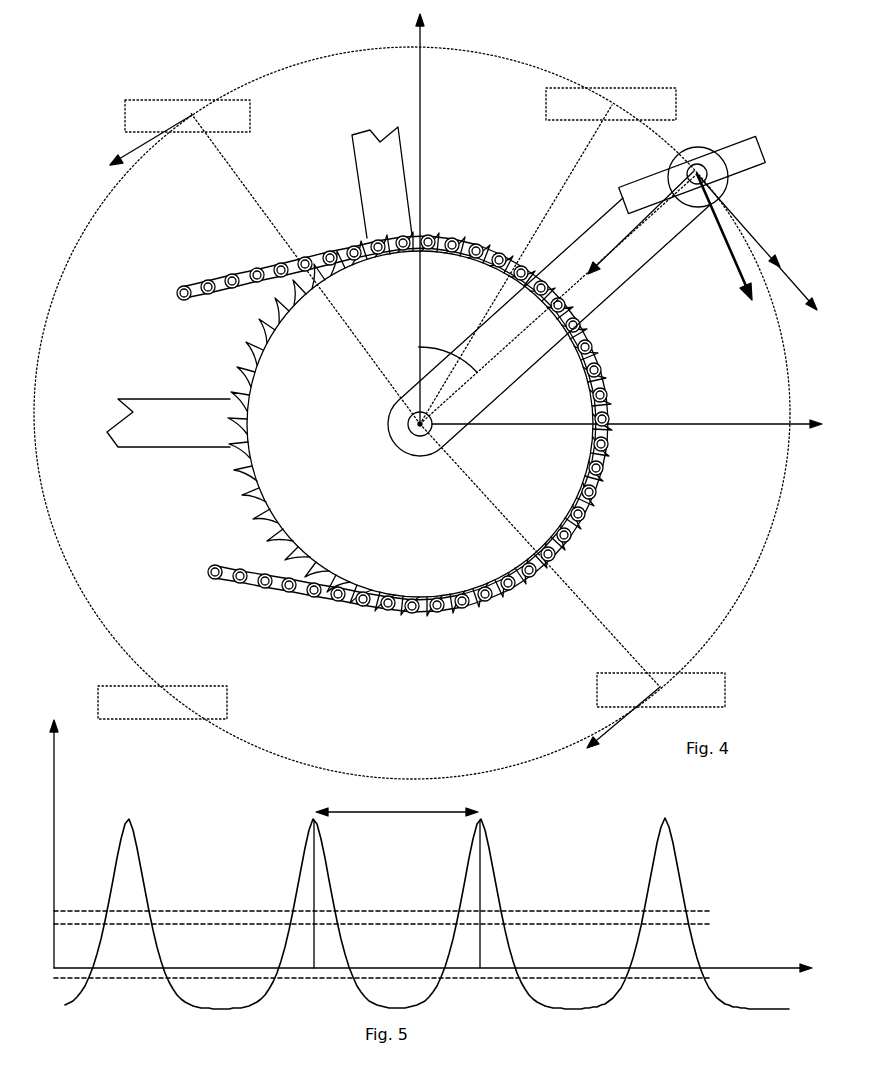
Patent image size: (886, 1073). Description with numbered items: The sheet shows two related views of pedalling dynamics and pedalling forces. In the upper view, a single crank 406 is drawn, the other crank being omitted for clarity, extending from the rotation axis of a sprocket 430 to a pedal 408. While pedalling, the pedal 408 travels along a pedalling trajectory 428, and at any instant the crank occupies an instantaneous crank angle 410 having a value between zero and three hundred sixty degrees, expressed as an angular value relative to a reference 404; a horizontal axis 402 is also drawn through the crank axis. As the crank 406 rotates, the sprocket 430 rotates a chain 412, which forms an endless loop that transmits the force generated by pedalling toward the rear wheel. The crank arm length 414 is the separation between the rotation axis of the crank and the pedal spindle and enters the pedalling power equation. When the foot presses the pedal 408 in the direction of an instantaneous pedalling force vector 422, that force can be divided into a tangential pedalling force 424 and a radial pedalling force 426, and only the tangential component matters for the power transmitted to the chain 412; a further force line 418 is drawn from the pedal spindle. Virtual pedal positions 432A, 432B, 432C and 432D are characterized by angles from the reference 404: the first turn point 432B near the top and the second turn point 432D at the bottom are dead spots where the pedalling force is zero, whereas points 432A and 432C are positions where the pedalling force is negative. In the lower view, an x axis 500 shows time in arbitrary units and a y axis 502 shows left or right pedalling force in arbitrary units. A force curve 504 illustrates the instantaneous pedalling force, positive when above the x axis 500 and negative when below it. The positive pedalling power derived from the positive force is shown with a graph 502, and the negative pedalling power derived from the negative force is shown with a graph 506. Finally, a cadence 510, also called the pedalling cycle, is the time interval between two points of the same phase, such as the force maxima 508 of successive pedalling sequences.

In FIG. 4, the horizontal reference axis 402 is at (774, 423).
In FIG. 4, the reference 404 is at (420, 79).
In FIG. 4, the crank 406 is at (582, 236).
In FIG. 4, the pedal 408 is at (762, 152).
In FIG. 4, the instantaneous crank angle 410 is at (436, 347).
In FIG. 4, the chain 412 is at (244, 270).
In FIG. 4, the crank arm length 414 is at (586, 270).
In FIG. 4, the applied pedal force 418 is at (796, 303).
In FIG. 4, the instantaneous pedalling force vector 422 is at (742, 282).
In FIG. 4, the tangential pedalling force 424 is at (768, 251).
In FIG. 4, the radial pedalling force 426 is at (700, 208).
In FIG. 4, the pedalling trajectory 428 is at (305, 58).
In FIG. 4, the sprocket 430 is at (238, 479).
In FIG. 4, the virtual pedal position 432A is at (150, 100).
In FIG. 4, the first turn point 432B is at (574, 88).
In FIG. 4, the virtual pedal position 432C is at (666, 673).
In FIG. 4, the second turn point 432D is at (170, 686).
In FIG. 5, the x axis 500 is at (779, 967).
In FIG. 5, the y axis 502 is at (55, 778).
In FIG. 5, the force curve 504 is at (115, 862).
In FIG. 5, the negative pedalling power graph 506 is at (710, 924).
In FIG. 5, the force maxima 508 is at (315, 880).
In FIG. 5, the cadence 510 is at (397, 816).